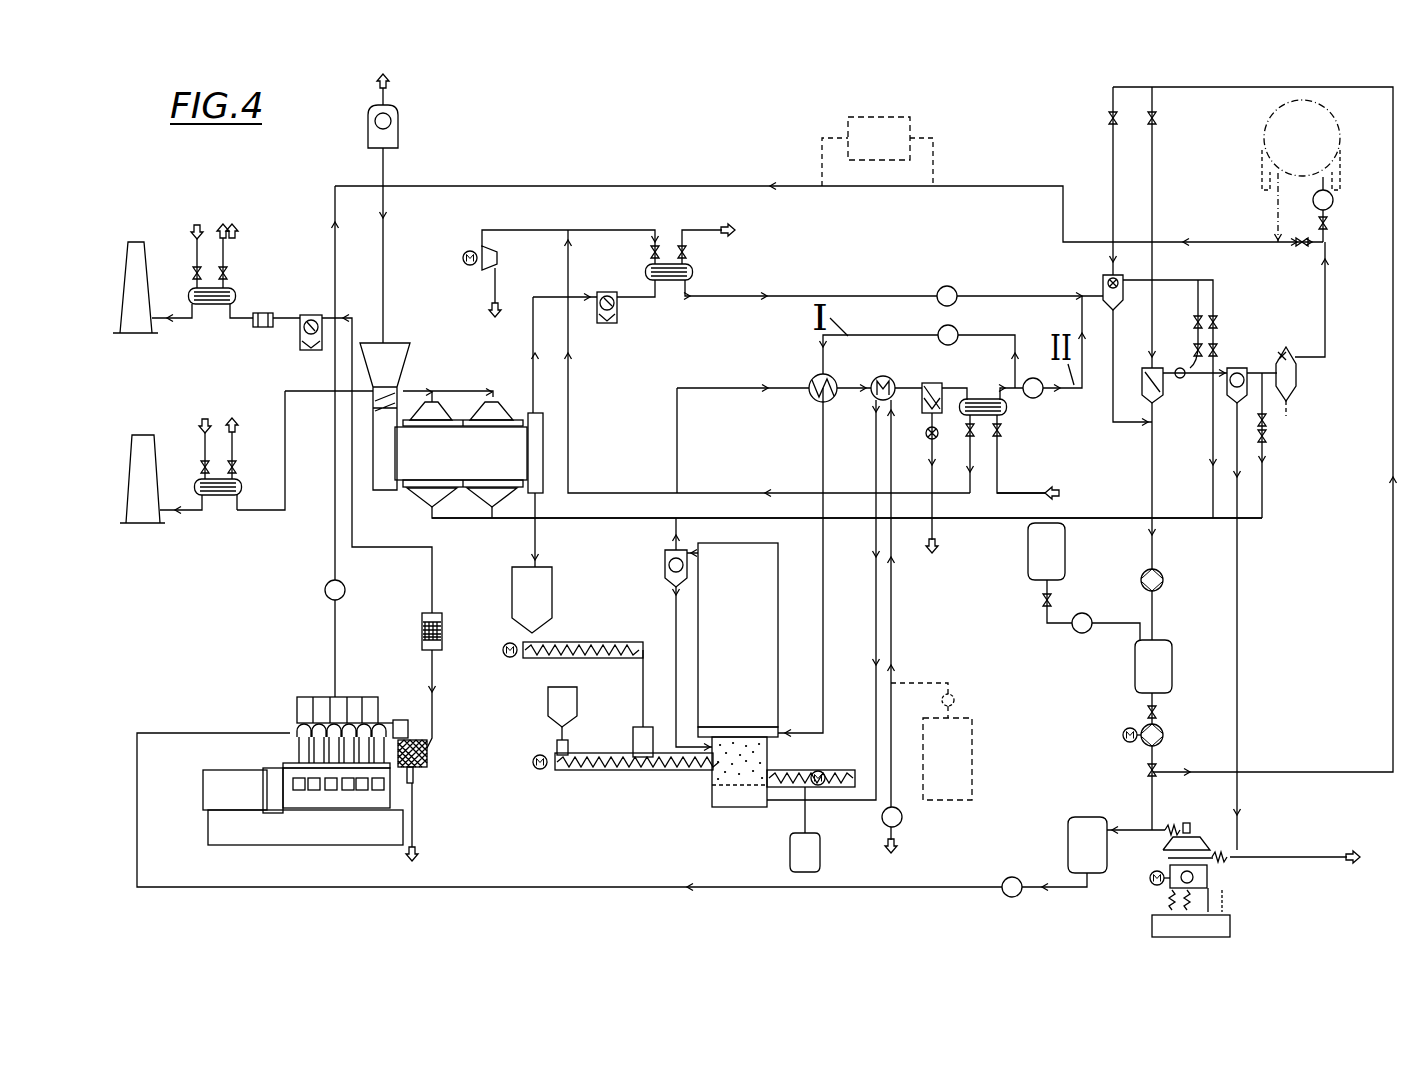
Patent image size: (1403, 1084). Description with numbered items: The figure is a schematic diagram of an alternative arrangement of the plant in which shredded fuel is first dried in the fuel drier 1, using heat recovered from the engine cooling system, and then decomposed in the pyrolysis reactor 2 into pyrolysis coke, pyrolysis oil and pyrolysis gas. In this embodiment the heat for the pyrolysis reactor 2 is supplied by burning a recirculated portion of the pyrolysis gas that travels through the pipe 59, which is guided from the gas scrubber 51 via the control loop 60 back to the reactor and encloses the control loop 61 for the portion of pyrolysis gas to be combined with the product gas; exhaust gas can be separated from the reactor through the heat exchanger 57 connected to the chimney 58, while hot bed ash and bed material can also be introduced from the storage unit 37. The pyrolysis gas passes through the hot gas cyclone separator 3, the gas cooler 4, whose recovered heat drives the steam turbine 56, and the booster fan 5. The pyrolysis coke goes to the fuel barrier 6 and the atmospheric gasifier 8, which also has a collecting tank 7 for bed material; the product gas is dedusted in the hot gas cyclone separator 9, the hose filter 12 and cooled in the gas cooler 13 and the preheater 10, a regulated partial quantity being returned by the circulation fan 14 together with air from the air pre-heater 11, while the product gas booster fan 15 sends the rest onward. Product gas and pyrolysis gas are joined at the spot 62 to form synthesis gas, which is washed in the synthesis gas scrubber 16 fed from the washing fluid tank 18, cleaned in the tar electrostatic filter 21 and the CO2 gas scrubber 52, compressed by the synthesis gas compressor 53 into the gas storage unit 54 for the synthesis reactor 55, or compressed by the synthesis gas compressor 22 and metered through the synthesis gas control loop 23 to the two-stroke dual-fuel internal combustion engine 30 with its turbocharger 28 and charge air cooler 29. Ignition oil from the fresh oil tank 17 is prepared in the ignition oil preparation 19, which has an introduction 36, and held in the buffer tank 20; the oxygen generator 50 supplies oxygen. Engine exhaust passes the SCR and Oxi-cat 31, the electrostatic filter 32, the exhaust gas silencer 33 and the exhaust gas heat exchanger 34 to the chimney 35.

The fuel drier 1 is at (370, 133).
The pyrolysis reactor 2 is at (451, 425).
The hot gas cyclone separator 3 is at (610, 320).
The gas cooler 4 is at (672, 282).
The booster fan 5 is at (940, 290).
The fuel barrier for the gasifier 6 is at (577, 612).
The collecting tank for bed material of the gasifier 7 is at (633, 728).
The atmospheric gasifier 8 is at (776, 675).
The hot gas cyclone separator 9 is at (665, 563).
The preheater for the recirculating product gas 10 is at (814, 380).
The air pre-heater 11 is at (878, 398).
The hose filter 12 is at (940, 391).
The gas cooler 13 is at (1000, 414).
The circulation fan 14 is at (960, 336).
The product gas booster fan 15 is at (1040, 396).
The synthesis gas scrubber 16 is at (1160, 390).
The fresh oil tank 17 is at (1044, 552).
The washing fluid tank 18 is at (1146, 668).
The ignition oil preparation 19 is at (1191, 853).
The buffer tank for ignition oil 20 is at (1087, 845).
The tar electrostatic filter 21 is at (1235, 365).
The synthesis gas compressor 22 is at (328, 586).
The synthesis gas control loop 23 is at (323, 715).
The turbocharger 28 is at (418, 762).
The charge air cooler 29 is at (406, 720).
The two-stroke dual-fuel internal combustion engine 30 is at (318, 796).
The SCR- and Oxi-cat 31 is at (428, 620).
The electrostatic filter for the engine exhaust gas 32 is at (309, 322).
The exhaust gas silencer 33 is at (262, 316).
The exhaust gas heat exchanger 34 is at (193, 290).
The chimney 35 is at (133, 287).
The introduction in ignition oil preparation 36 is at (1372, 863).
The storage unit with introduction device 37 is at (793, 852).
The oxygen generator 50 is at (947, 759).
The gas scrubber for pyrolysis gas 51 is at (1102, 280).
The CO2 gas scrubber 52 is at (1285, 352).
The synthesis gas compressor 53 is at (1327, 207).
The gas storage unit 54 is at (1301, 145).
The synthesis reactor 55 is at (879, 138).
The steam turbine 56 is at (480, 255).
The heat exchanger for separating exhaust gas 57 is at (202, 480).
The chimney 58 is at (143, 455).
The pipe for pyrolysis gas to be recirculated 59 is at (575, 522).
The control loop for the recirculated pyrolysis gas portion 60 is at (1216, 342).
The control loop for the pyrolysis gas portion combined with product gas 61 is at (1208, 312).
The point of junction of product gas and pyrolysis gas 62 is at (1193, 356).